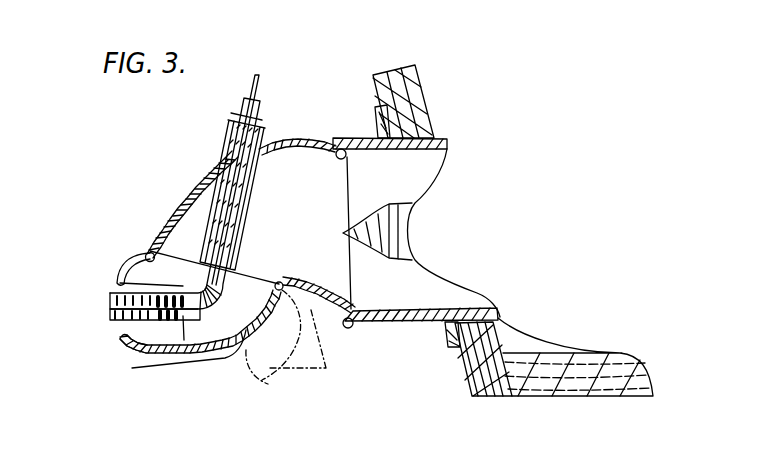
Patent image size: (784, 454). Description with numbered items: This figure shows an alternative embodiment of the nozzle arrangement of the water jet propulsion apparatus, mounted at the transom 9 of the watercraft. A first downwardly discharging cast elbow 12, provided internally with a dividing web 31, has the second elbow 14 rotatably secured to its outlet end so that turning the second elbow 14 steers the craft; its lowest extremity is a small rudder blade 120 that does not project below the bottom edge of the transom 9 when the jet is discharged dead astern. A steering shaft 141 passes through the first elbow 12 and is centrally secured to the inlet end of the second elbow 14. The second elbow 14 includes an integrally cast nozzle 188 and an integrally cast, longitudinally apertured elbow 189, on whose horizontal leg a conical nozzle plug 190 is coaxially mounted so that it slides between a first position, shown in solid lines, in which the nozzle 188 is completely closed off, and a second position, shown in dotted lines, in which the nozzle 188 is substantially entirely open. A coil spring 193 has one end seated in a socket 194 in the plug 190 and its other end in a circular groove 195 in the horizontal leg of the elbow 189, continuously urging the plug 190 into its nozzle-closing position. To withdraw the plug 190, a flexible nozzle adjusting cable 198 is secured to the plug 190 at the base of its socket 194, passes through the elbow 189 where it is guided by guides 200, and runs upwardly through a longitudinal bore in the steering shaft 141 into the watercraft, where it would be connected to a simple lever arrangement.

The nozzle adjusting cable 198 is at (256, 84).
The shaft 141 is at (261, 111).
The first downwardly discharging cast elbow 12 is at (182, 198).
The web 31 is at (257, 302).
The conical nozzle plug 190 is at (112, 314).
The coil spring 193 is at (113, 296).
The socket 194 is at (113, 319).
The guides 200 is at (241, 337).
The nozzle 188 is at (121, 345).
The small rudder blade 120 is at (162, 364).
The circular groove 195 is at (184, 340).
The longitudinally apertured elbow 189 is at (232, 352).
The second elbow 14 is at (297, 312).
The transom 9 is at (480, 383).